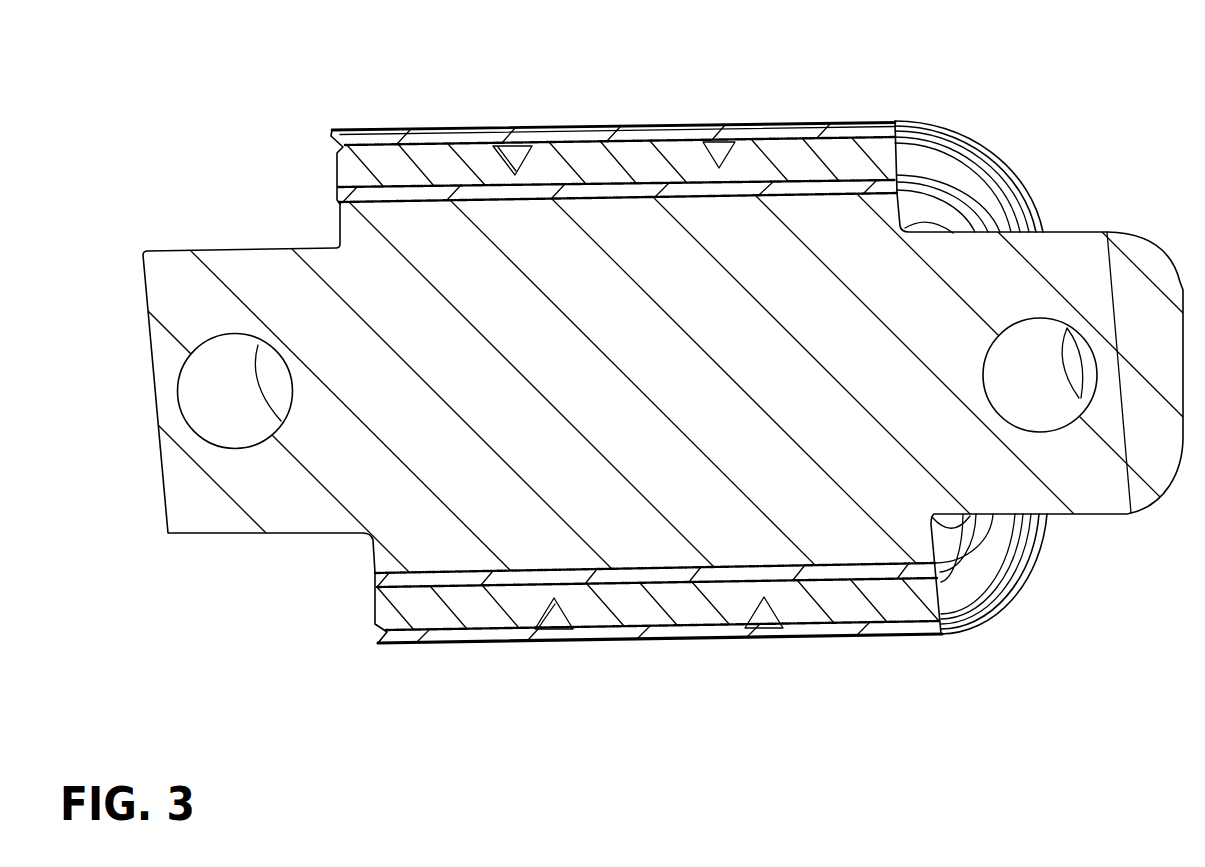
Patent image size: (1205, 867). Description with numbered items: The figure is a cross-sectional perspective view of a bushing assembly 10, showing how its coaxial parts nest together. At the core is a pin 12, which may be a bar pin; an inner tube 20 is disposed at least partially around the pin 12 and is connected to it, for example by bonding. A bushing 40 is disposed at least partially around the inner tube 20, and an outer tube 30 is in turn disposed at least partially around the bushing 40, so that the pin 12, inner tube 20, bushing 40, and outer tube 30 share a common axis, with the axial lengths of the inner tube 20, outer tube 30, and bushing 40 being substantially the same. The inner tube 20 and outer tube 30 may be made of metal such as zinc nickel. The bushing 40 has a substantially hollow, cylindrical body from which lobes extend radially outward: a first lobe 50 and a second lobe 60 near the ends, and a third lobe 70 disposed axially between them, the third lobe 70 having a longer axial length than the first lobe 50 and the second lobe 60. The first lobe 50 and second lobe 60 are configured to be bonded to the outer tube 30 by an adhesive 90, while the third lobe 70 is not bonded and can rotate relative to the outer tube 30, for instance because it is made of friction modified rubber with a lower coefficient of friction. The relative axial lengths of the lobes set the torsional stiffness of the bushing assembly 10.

The bushing assembly 10 is at (255, 92).
The pin 12 is at (230, 245).
The inner tube 20 is at (978, 205).
The outer tube 30 is at (923, 113).
The bushing 40 is at (955, 160).
The first lobe 50 is at (436, 168).
The second lobe 60 is at (814, 158).
The third lobe 70 is at (624, 158).
The adhesive 90 is at (385, 137).